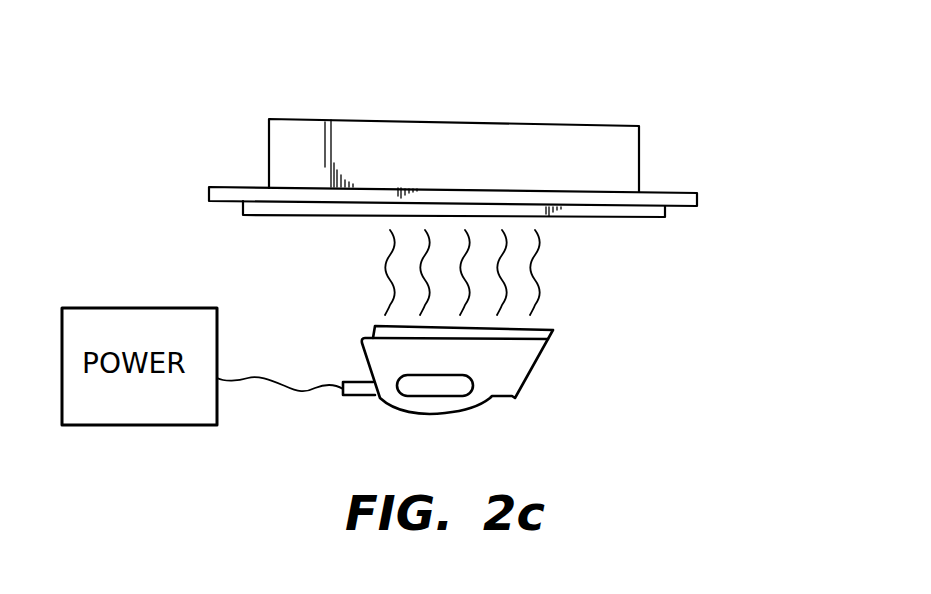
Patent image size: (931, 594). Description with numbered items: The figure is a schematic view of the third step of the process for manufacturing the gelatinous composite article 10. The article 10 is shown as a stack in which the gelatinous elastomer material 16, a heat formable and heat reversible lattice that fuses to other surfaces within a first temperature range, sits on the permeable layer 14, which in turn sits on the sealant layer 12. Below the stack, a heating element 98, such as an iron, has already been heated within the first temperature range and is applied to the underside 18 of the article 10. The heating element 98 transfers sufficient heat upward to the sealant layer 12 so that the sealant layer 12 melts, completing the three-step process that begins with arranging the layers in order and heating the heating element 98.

The gelatinous composite article 10 is at (653, 115).
The sealant layer 12 is at (665, 212).
The permeable layer 14 is at (233, 187).
The gelatinous elastomer material 16 is at (445, 120).
The underside 18 is at (592, 218).
The heating element 98 is at (525, 357).